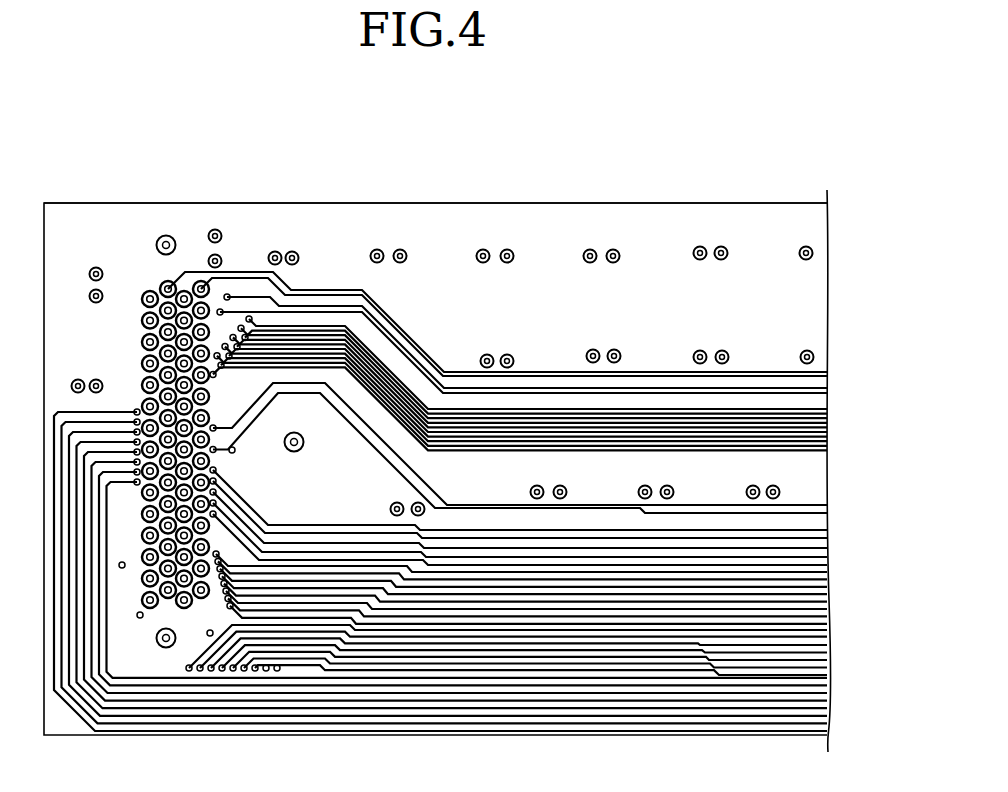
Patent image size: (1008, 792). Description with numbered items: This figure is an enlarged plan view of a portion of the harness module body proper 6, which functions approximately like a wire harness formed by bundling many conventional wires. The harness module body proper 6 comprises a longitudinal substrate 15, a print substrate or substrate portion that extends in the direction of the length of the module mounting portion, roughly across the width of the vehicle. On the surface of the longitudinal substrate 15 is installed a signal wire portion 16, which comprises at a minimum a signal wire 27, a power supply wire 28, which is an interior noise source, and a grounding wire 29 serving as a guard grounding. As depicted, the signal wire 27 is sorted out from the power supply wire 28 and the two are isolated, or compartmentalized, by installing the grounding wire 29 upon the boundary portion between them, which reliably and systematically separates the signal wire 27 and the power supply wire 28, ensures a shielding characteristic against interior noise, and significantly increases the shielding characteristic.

The harness module body proper 6 is at (663, 187).
The longitudinal substrate 15 is at (757, 201).
The signal wire portion 16 is at (834, 481).
The signal wire 27 is at (833, 505).
The power supply wire 28 is at (831, 379).
The grounding wire 29 is at (831, 430).